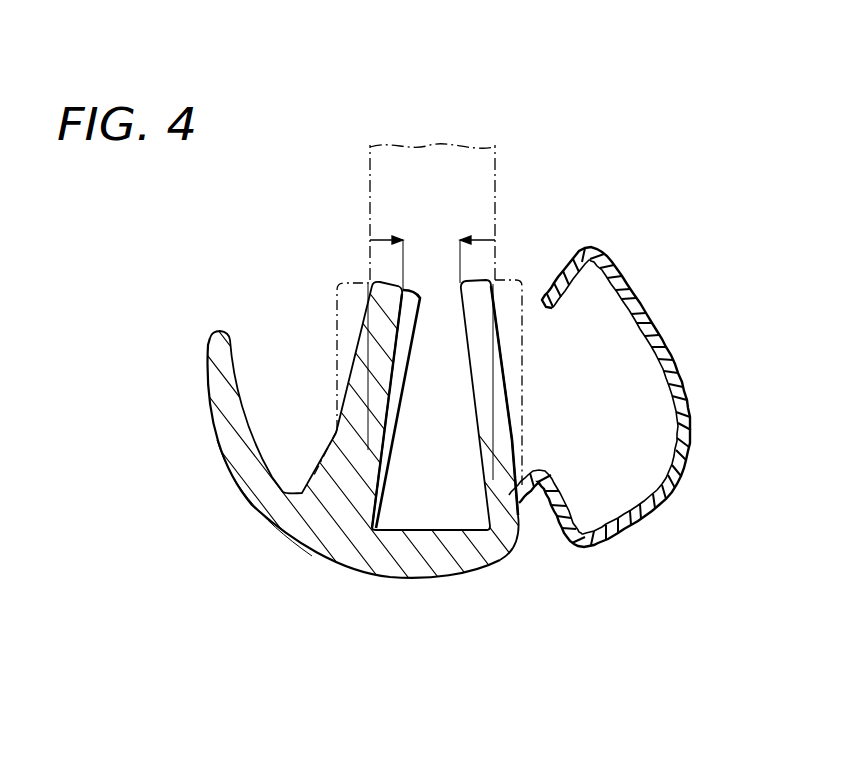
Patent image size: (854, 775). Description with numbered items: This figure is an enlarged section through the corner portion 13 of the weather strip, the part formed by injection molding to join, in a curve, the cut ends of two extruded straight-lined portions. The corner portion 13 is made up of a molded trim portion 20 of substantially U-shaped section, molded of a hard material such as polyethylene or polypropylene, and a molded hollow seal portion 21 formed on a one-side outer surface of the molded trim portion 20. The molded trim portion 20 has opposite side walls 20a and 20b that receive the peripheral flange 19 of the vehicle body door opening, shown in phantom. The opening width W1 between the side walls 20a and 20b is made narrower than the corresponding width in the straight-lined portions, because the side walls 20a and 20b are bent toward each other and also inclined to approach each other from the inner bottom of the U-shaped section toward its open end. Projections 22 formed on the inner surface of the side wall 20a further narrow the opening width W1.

The corner portion 13 is at (370, 436).
The peripheral flange 19 is at (497, 172).
The molded trim portion 20 is at (418, 572).
The side wall 20a is at (380, 283).
The side wall 20b is at (472, 281).
The molded hollow seal portion 21 is at (660, 330).
The projection 22 is at (407, 377).
The opening width W1 is at (432, 252).